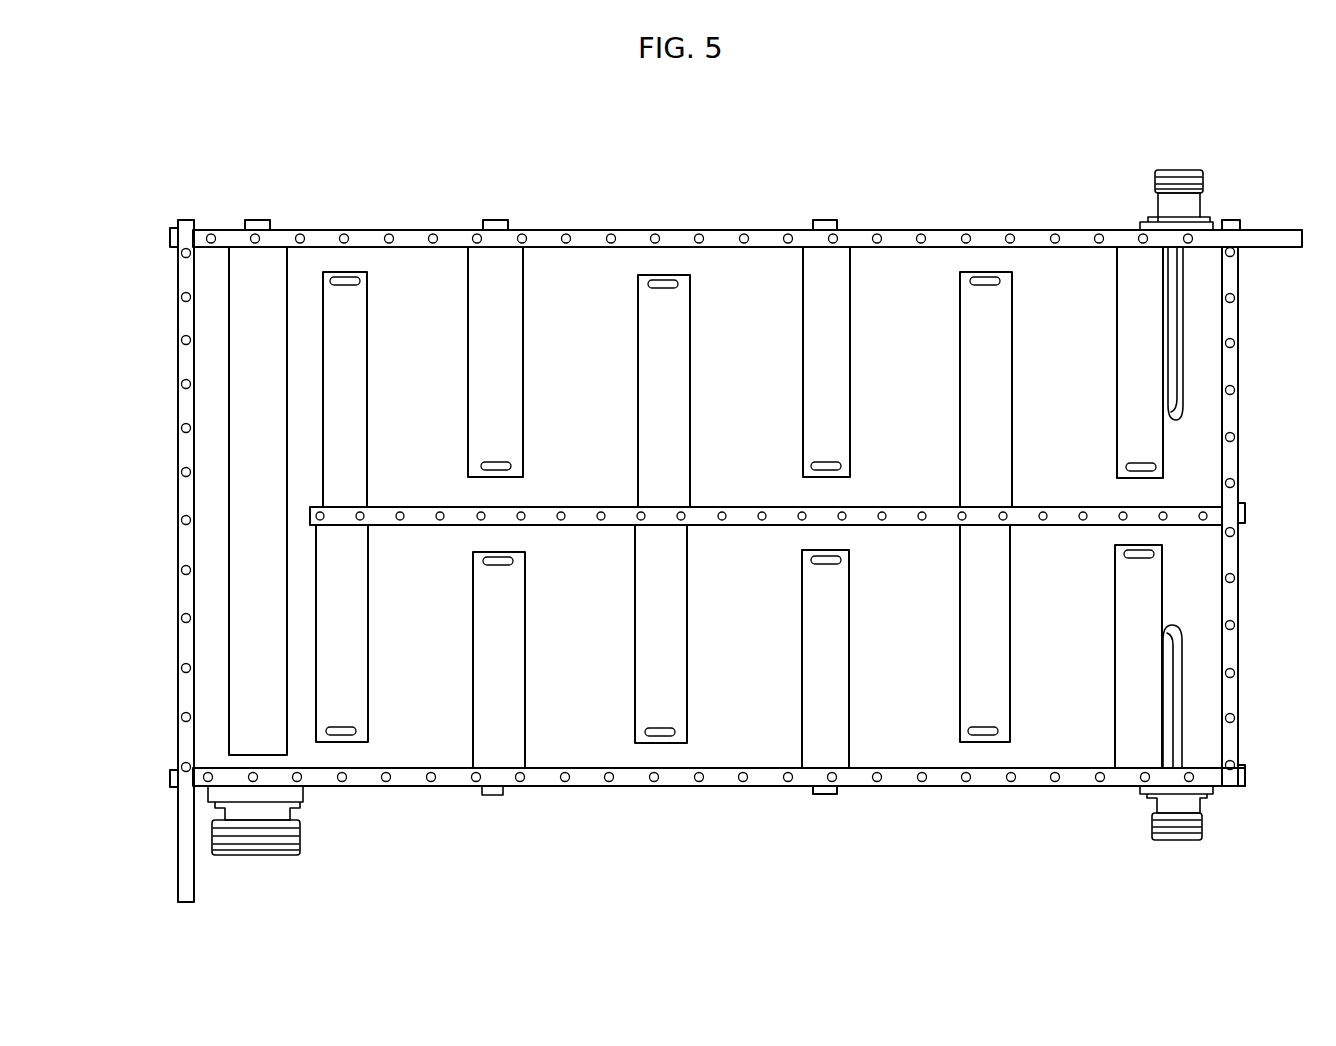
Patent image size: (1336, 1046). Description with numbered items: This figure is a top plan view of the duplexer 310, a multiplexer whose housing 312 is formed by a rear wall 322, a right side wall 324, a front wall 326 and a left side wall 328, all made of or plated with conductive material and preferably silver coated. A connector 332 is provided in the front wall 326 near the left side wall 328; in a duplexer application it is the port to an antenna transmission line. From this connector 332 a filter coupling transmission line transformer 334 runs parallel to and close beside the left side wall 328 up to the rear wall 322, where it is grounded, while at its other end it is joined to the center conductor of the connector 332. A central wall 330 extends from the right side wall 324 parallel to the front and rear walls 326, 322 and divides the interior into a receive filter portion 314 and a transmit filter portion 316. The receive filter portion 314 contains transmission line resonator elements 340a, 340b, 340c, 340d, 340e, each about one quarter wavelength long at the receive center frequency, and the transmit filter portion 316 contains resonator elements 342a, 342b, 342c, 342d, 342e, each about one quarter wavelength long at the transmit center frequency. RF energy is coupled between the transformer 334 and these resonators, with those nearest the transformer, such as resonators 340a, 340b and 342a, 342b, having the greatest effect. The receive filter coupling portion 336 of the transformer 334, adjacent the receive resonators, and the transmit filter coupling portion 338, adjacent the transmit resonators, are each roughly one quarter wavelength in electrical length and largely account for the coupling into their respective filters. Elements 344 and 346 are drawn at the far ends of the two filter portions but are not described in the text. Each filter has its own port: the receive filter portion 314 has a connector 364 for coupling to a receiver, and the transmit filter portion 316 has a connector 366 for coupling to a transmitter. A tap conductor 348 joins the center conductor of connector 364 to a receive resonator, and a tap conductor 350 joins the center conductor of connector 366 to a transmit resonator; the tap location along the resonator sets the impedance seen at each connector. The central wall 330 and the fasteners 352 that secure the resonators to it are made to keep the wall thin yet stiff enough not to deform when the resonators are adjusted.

The duplexer 310 is at (423, 190).
The housing 312 is at (1250, 226).
The receive filter portion 314 is at (772, 357).
The transmit filter portion 316 is at (767, 590).
The rear wall 322 is at (1110, 187).
The right side wall 324 is at (1238, 365).
The front wall 326 is at (1067, 787).
The left side wall 328 is at (178, 277).
The central wall 330 is at (778, 507).
The connector 332 is at (245, 857).
The filter coupling transmission line transformer 334 is at (243, 440).
The receive filter coupling portion 336 is at (240, 378).
The transmit filter coupling portion 338 is at (240, 672).
The transmission line resonator element 340a is at (367, 408).
The transmission line resonator element 340b is at (518, 398).
The transmission line resonator element 340c is at (688, 398).
The transmission line resonator element 340d is at (848, 396).
The transmission line resonator element 340e is at (1010, 296).
The transmission line resonator element 342a is at (365, 692).
The transmission line resonator element 342b is at (523, 705).
The transmission line resonator element 342c is at (685, 683).
The transmission line resonator element 342d is at (847, 698).
The transmission line resonator element 342e is at (1005, 685).
The upper end fin 344 is at (1117, 421).
The lower end fin 346 is at (1158, 585).
The tap conductor 348 is at (1183, 313).
The tap conductor 350 is at (1182, 668).
The fasteners 352 is at (503, 795).
The connector 364 is at (1193, 170).
The connector 366 is at (1200, 815).